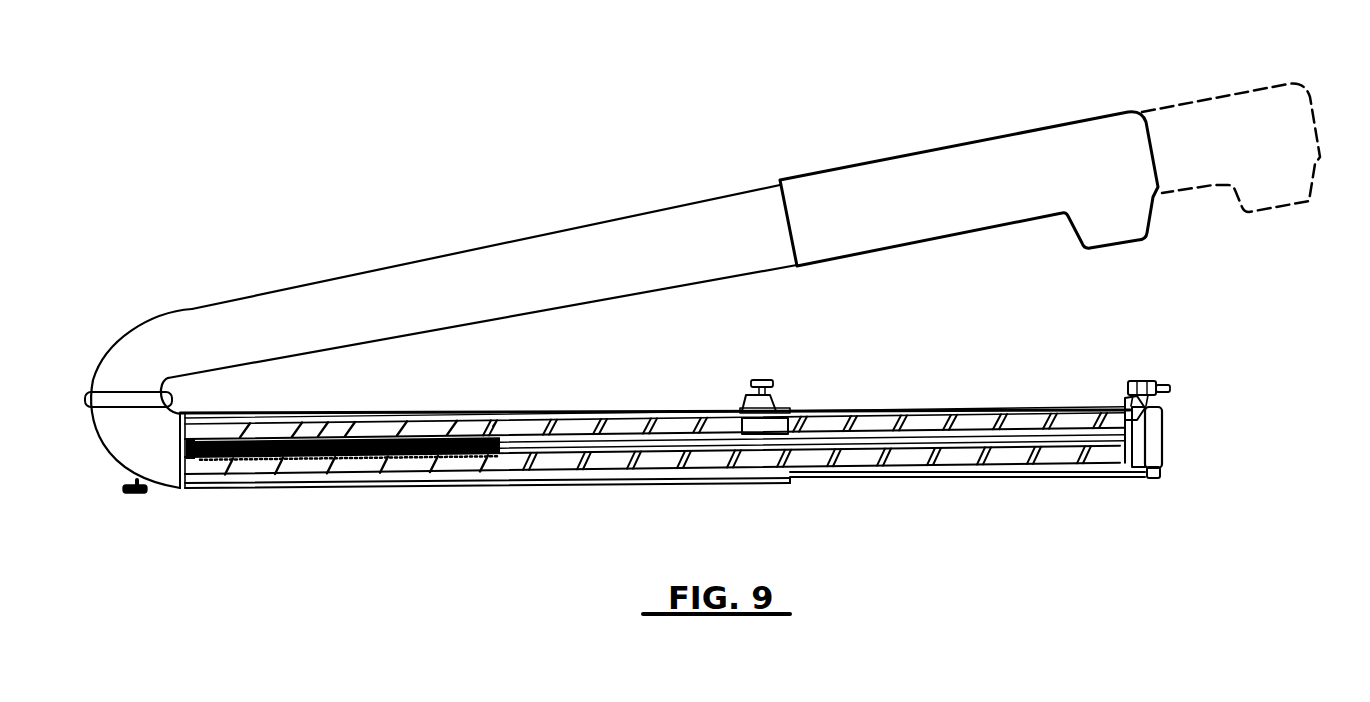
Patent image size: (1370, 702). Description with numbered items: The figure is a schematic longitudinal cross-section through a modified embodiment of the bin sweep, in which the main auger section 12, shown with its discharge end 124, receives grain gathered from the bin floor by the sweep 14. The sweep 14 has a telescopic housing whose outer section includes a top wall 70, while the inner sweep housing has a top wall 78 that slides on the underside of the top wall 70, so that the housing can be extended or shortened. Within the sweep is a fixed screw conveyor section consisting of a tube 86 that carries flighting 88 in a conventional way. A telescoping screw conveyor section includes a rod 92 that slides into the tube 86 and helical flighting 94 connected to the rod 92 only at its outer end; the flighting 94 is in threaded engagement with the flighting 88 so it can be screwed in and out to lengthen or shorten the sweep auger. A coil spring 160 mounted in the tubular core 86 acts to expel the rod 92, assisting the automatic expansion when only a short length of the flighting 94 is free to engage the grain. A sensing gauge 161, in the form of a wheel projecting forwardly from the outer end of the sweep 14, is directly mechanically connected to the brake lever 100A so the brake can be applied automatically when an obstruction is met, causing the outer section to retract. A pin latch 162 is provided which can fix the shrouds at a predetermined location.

The main auger section 12 is at (516, 257).
The discharge end 124 is at (1052, 118).
The sweep 14 is at (402, 405).
The top wall 70 is at (467, 410).
The flighting 88 is at (297, 439).
The tube 86 is at (316, 441).
The coil spring 160 is at (366, 466).
The pin latch 162 is at (752, 377).
The rod 92 is at (858, 437).
The top wall 78 is at (927, 410).
The flighting 94 is at (873, 462).
The brake lever 100A is at (1117, 400).
The sensing gauge 161 is at (1167, 387).